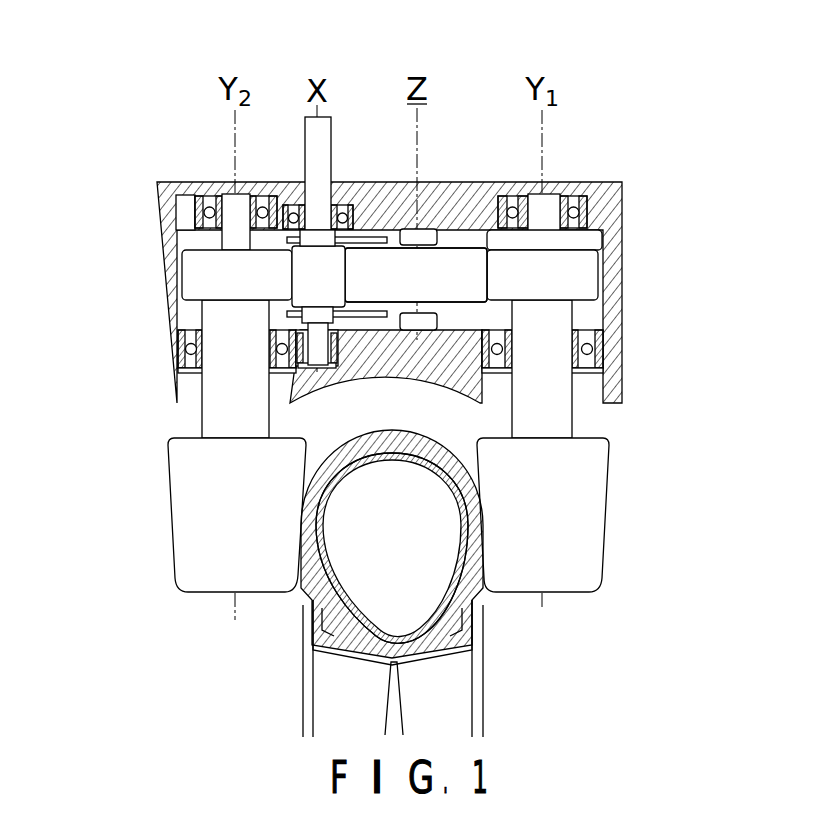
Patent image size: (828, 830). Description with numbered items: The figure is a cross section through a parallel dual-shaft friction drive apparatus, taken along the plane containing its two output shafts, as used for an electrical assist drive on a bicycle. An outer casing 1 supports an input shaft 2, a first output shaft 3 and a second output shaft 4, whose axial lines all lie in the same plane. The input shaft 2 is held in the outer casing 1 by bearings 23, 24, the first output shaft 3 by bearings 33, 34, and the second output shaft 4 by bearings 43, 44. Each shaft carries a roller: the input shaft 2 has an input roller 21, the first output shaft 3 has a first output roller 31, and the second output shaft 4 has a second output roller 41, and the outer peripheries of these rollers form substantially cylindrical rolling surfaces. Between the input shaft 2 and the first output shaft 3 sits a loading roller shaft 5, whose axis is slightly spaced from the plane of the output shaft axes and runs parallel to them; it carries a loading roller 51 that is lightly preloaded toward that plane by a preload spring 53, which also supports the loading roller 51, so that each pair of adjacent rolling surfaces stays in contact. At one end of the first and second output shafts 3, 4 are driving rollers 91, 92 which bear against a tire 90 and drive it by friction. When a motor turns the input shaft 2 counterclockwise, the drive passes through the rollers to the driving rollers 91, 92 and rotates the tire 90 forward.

The outer casing 1 is at (168, 183).
The input shaft 2 is at (311, 147).
The input roller 21 is at (305, 277).
The bearing 23 is at (380, 237).
The bearing 24 is at (303, 373).
The first output shaft 3 is at (552, 213).
The first output roller 31 is at (585, 277).
The bearing 33 is at (585, 213).
The bearing 34 is at (587, 345).
The second output shaft 4 is at (224, 192).
The second output roller 41 is at (190, 270).
The bearing 43 is at (198, 215).
The bearing 44 is at (188, 342).
The loading roller shaft 5 is at (440, 250).
The loading roller 51 is at (470, 263).
The preload spring 53 is at (400, 229).
The tire 90 is at (483, 594).
The driving roller 91 is at (598, 491).
The driving roller 92 is at (179, 496).